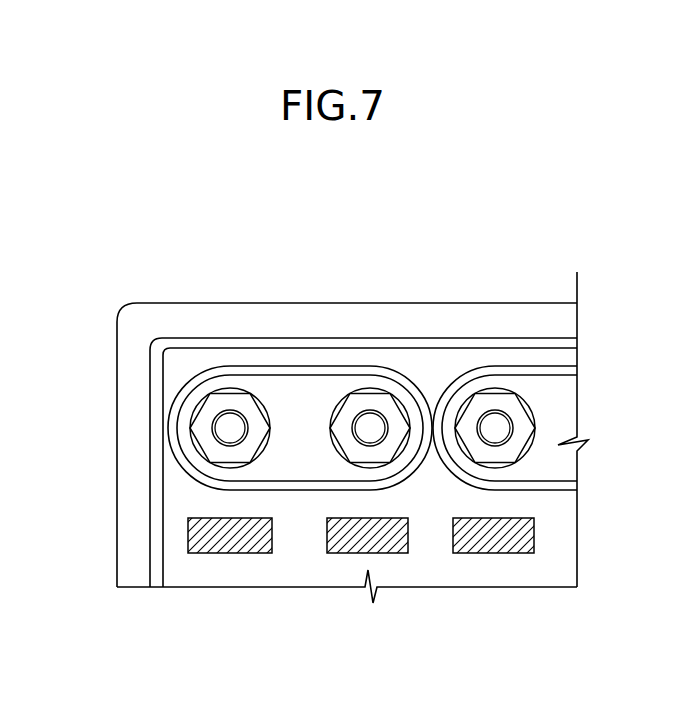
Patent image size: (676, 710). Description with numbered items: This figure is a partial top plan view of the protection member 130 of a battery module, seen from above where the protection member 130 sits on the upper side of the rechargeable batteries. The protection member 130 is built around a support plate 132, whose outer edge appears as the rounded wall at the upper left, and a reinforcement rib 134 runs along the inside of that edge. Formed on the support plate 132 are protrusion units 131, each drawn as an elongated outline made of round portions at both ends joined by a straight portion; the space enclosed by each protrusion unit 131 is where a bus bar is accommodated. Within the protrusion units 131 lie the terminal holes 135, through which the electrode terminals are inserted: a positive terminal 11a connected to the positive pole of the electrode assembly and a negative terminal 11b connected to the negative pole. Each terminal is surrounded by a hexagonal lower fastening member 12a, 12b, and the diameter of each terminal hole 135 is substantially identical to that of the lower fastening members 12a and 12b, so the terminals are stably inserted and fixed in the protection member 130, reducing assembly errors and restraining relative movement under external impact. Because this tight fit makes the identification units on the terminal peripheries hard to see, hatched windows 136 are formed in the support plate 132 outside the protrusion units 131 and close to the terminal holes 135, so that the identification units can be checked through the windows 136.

The protection member 130 is at (99, 435).
The protrusion unit 131 is at (190, 387).
The support plate 132 is at (133, 318).
The reinforcement rib 134 is at (153, 497).
The terminal hole 135 is at (340, 402).
The window 136 is at (350, 537).
The positive terminal 11a is at (231, 426).
The negative terminal 11b is at (370, 426).
The lower fastening member 12a is at (213, 407).
The lower fastening member 12b is at (387, 408).